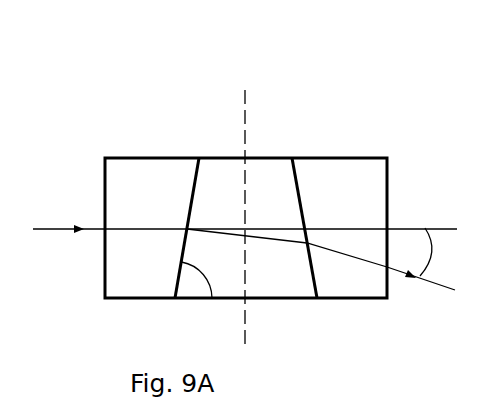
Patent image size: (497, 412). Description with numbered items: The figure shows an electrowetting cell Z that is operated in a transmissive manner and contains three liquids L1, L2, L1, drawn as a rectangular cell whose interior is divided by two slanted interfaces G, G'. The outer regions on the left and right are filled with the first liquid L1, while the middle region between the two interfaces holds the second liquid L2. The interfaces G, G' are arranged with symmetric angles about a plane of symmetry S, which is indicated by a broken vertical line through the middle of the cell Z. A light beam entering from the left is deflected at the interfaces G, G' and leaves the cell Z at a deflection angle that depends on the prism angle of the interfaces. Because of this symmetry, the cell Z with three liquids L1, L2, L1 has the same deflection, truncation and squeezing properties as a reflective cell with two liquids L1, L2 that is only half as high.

The EW cell Z is at (82, 133).
The interface G is at (312, 216).
The interface G' is at (206, 216).
The plane of symmetry S is at (246, 322).
The liquid L1 is at (222, 200).
The liquid L2 is at (225, 200).